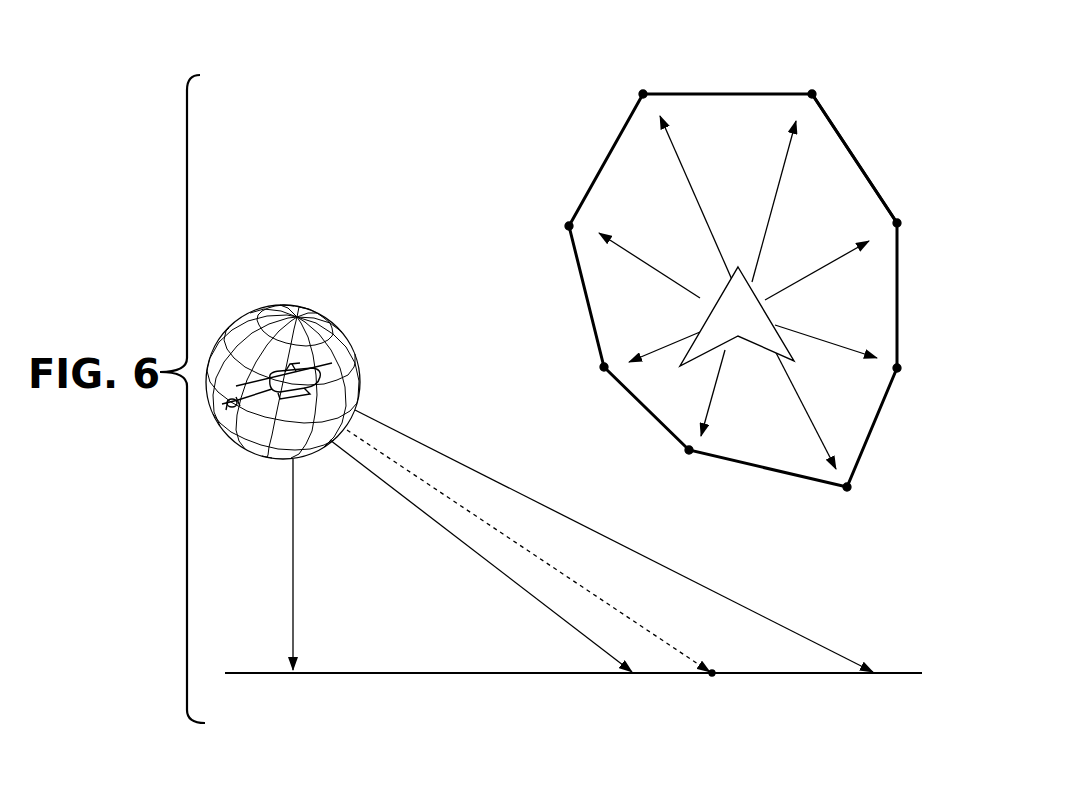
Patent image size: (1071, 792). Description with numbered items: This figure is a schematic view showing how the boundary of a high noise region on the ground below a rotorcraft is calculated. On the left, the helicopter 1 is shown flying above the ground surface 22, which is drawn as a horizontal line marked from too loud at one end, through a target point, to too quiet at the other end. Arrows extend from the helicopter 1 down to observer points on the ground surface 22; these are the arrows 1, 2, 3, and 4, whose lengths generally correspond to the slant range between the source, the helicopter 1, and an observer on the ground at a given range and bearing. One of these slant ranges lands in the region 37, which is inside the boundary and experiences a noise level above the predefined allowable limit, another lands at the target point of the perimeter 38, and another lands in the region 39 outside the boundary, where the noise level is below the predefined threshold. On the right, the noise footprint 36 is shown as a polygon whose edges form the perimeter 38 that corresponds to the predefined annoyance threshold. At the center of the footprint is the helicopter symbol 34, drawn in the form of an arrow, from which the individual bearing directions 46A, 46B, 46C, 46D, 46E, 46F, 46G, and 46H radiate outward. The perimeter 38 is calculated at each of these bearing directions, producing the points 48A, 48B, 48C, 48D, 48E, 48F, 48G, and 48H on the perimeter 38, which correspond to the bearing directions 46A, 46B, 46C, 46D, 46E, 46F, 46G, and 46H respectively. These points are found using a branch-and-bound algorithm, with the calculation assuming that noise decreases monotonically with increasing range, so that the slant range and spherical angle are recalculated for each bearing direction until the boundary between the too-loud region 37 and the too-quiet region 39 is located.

The helicopter 1 is at (302, 354).
The slant range arrow 2 is at (614, 541).
The slant range arrow 3 is at (481, 556).
The slant range arrow 4 is at (528, 551).
The ground surface 22 is at (397, 670).
The helicopter symbol 34 is at (713, 313).
The noise footprint 36 is at (738, 88).
The region inside the perimeter 37 is at (490, 670).
The perimeter 38 is at (712, 670).
The region outside the perimeter 39 is at (900, 670).
The bearing direction 46A is at (655, 258).
The bearing direction 46B is at (690, 190).
The bearing direction 46C is at (775, 210).
The bearing direction 46D is at (802, 277).
The bearing direction 46E is at (820, 345).
The bearing direction 46F is at (790, 387).
The bearing direction 46G is at (717, 368).
The bearing direction 46H is at (678, 335).
The perimeter point 48A is at (566, 226).
The perimeter point 48B is at (644, 92).
The perimeter point 48C is at (815, 93).
The perimeter point 48D is at (900, 222).
The perimeter point 48E is at (900, 370).
The perimeter point 48F is at (846, 490).
The perimeter point 48G is at (687, 451).
The perimeter point 48H is at (601, 367).